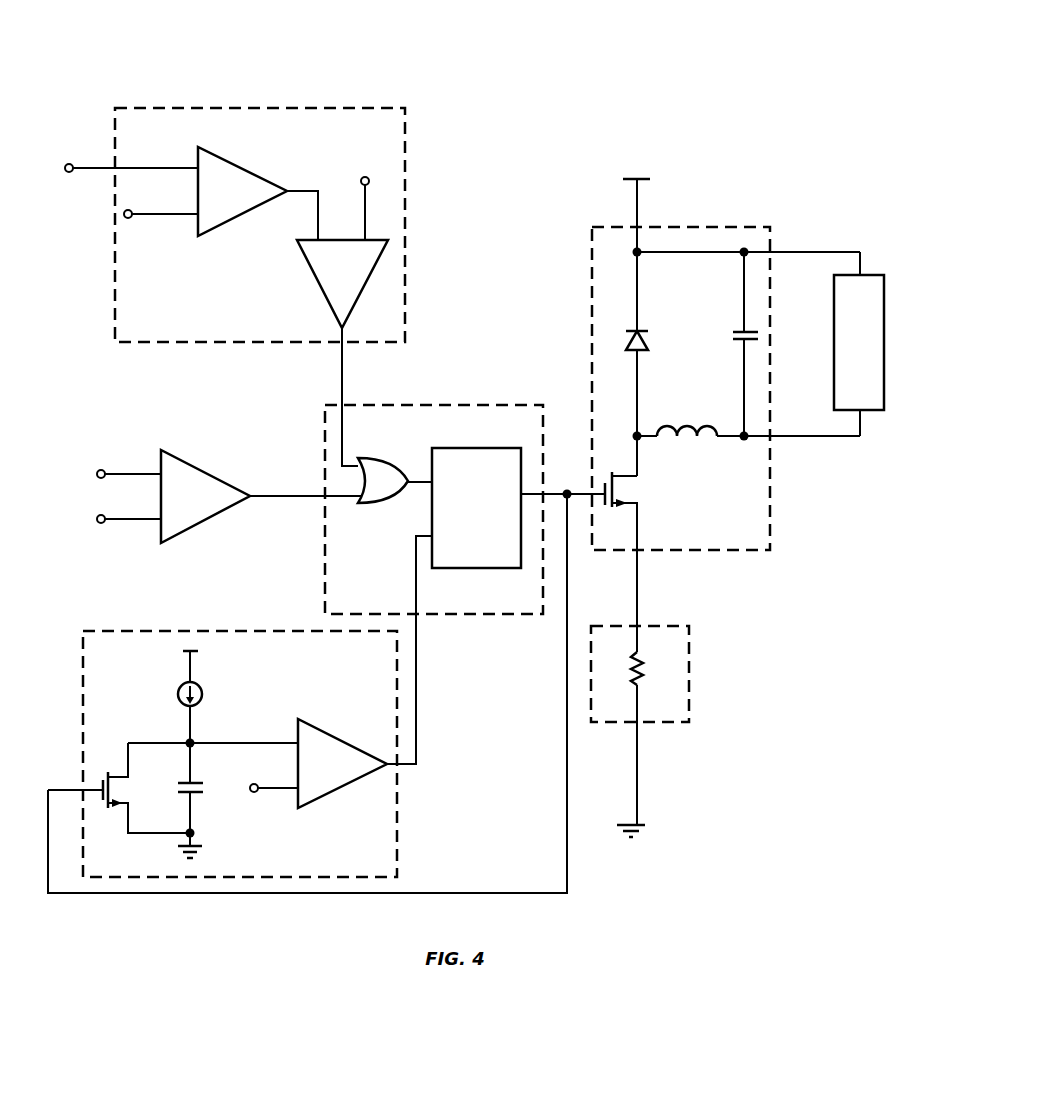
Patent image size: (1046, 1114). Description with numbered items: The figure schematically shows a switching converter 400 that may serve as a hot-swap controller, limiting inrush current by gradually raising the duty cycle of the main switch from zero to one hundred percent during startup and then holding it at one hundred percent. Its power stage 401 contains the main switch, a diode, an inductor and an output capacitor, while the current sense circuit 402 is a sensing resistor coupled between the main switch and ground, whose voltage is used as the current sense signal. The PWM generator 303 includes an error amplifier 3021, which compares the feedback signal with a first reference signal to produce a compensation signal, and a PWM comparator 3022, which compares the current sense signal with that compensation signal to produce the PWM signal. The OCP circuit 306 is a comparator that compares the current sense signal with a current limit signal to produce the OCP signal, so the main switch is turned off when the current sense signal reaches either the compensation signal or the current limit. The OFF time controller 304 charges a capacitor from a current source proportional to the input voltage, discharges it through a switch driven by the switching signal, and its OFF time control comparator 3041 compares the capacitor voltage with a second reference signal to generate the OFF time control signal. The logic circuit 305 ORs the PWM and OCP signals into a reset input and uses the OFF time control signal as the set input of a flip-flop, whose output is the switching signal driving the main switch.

The switching converter 400 is at (790, 55).
The power stage 401 is at (590, 236).
The current sense circuit 402 is at (657, 722).
The PWM generator 303 is at (343, 108).
The OFF time controller 304 is at (128, 630).
The logic circuit 305 is at (495, 404).
The OCP circuit 306 is at (192, 465).
The error amplifier 3021 is at (242, 191).
The PWM comparator 3022 is at (342, 284).
The OFF time control comparator 3041 is at (342, 763).